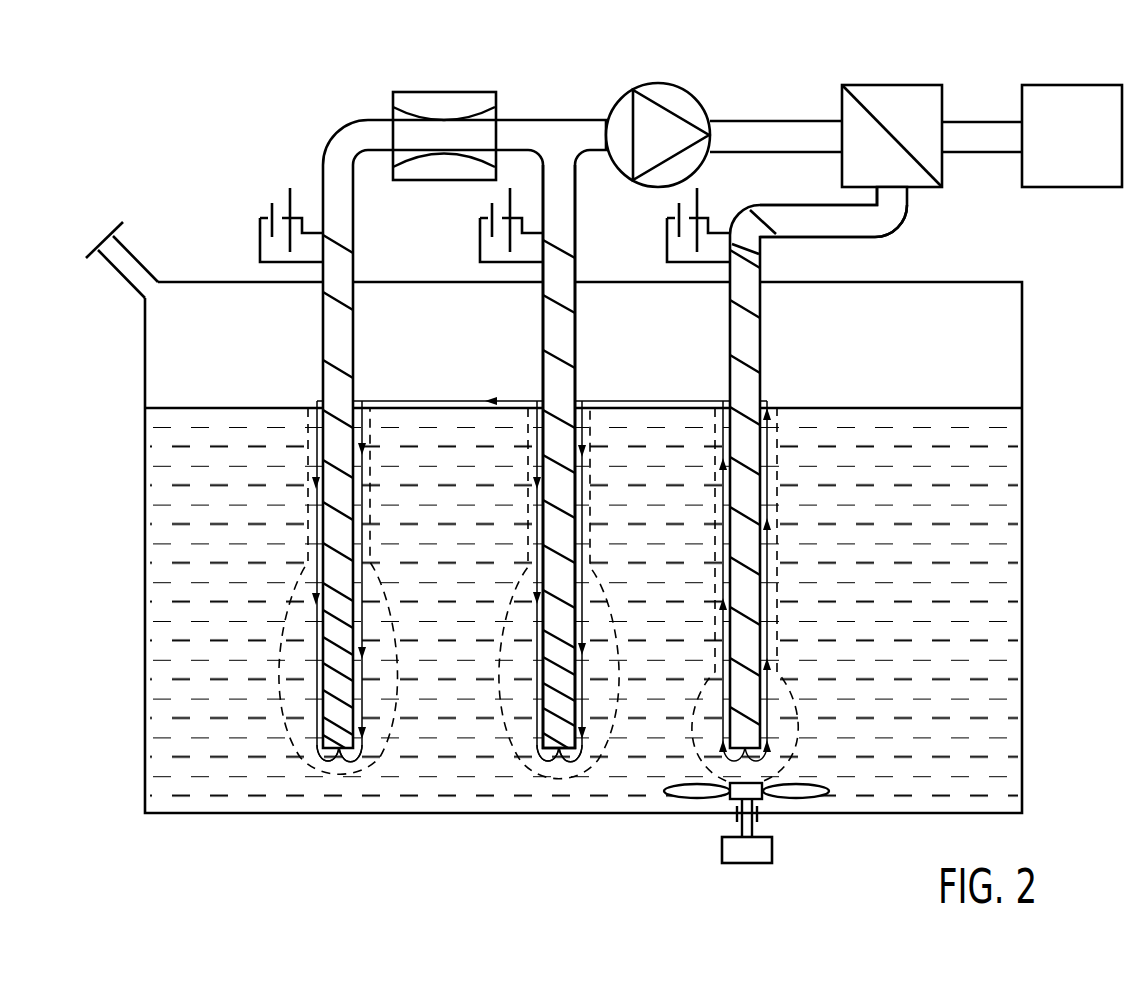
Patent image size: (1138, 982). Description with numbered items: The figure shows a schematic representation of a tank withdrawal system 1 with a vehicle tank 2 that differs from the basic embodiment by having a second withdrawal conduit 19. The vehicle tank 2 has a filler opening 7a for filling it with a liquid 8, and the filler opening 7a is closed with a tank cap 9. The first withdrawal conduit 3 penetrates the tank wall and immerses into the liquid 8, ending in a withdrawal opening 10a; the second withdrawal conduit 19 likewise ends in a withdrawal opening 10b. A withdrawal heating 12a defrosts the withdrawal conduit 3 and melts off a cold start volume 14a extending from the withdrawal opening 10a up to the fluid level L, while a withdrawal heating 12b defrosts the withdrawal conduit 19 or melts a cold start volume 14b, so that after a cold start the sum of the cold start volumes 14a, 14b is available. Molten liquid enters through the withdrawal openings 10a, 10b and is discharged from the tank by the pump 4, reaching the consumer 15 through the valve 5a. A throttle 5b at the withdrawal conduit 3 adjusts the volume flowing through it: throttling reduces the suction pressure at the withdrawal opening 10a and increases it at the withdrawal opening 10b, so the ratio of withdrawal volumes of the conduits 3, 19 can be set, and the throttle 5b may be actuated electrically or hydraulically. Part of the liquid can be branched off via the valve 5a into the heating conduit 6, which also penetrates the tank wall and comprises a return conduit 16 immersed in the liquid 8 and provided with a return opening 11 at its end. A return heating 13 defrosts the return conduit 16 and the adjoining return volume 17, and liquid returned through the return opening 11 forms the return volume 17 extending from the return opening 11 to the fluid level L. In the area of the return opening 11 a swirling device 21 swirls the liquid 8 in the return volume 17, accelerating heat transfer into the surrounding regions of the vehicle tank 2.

The tank withdrawal system 1 is at (248, 148).
The vehicle tank 2 is at (143, 352).
The withdrawal conduit 3 is at (322, 350).
The pump 4 is at (621, 92).
The valve 5a is at (861, 85).
The throttle 5b is at (417, 92).
The heating conduit 6 is at (868, 218).
The filler opening 7a is at (135, 258).
The liquid 8 is at (223, 551).
The tank cap 9 is at (98, 233).
The withdrawal opening 10a is at (338, 766).
The withdrawal opening 10b is at (560, 766).
The return opening 11 is at (765, 778).
The withdrawal heating 12a is at (258, 240).
The withdrawal heating 12b is at (478, 240).
The return heating 13 is at (665, 240).
The cold start volume 14a is at (299, 740).
The cold start volume 14b is at (520, 740).
The consumer 15 is at (1099, 85).
The return conduit 16 is at (760, 349).
The return volume 17 is at (805, 712).
The second withdrawal conduit 19 is at (578, 349).
The swirling device 21 is at (772, 850).
The fluid level L is at (988, 408).